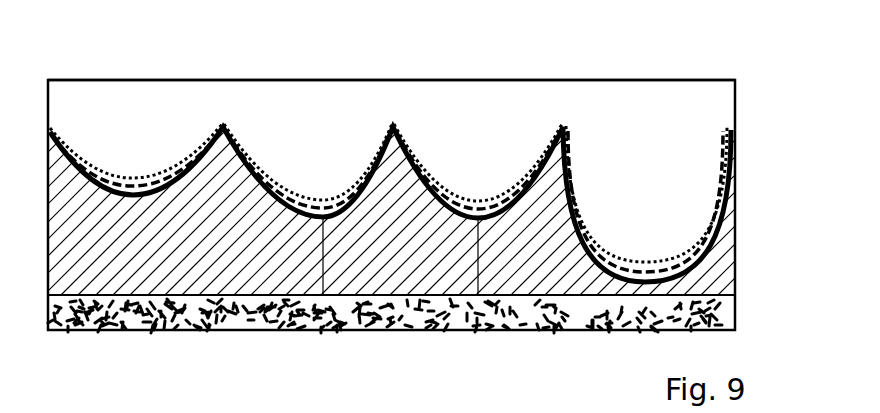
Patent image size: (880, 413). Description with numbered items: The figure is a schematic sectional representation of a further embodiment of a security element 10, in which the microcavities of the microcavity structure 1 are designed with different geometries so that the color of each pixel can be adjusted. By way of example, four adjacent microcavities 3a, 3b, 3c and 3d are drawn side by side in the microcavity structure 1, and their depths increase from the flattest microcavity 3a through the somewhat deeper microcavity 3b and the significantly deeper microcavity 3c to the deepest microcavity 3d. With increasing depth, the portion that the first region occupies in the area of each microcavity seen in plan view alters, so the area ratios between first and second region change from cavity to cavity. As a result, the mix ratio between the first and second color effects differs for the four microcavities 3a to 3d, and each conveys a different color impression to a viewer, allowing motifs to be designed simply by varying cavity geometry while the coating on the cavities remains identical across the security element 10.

The microcavity structure 1 is at (274, 92).
The security element 10 is at (439, 52).
The flattest microcavity 3a is at (71, 177).
The somewhat deeper microcavity 3b is at (301, 316).
The significantly deeper microcavity 3c is at (459, 312).
The deepest microcavity 3d is at (708, 240).